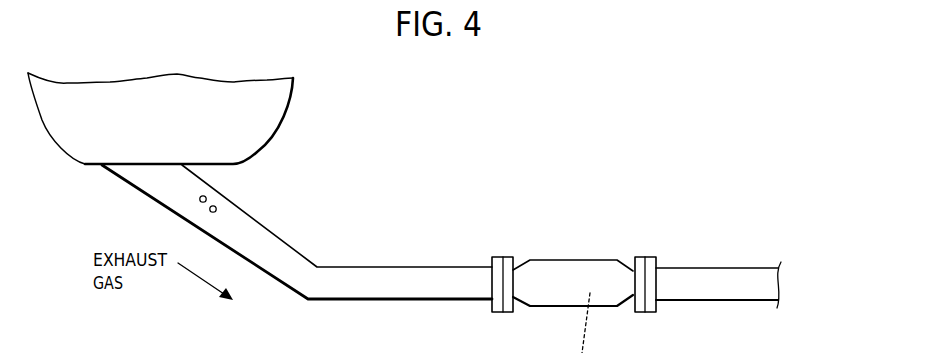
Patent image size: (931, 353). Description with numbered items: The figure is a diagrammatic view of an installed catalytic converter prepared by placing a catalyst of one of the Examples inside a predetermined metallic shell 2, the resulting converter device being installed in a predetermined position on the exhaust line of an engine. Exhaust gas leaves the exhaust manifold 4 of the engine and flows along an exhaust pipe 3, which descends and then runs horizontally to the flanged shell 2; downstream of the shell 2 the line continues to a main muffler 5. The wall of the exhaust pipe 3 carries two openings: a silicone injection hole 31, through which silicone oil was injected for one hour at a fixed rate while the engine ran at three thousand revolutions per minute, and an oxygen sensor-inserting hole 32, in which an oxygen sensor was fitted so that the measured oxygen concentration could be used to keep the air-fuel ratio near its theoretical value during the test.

The metallic shell 2 is at (570, 258).
The exhaust pipe 3 is at (305, 237).
The exhaust manifold 4 is at (272, 110).
The main muffler 5 is at (719, 272).
The silicone injection hole 31 is at (219, 207).
The oxygen sensor-inserting hole 32 is at (208, 195).